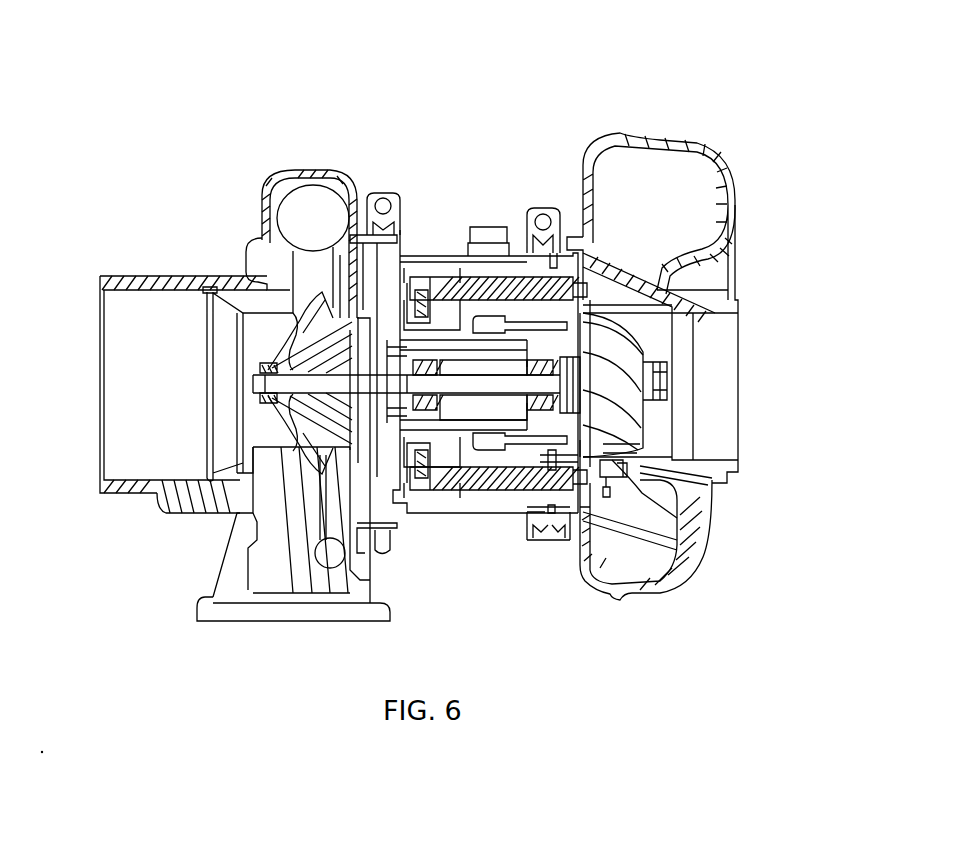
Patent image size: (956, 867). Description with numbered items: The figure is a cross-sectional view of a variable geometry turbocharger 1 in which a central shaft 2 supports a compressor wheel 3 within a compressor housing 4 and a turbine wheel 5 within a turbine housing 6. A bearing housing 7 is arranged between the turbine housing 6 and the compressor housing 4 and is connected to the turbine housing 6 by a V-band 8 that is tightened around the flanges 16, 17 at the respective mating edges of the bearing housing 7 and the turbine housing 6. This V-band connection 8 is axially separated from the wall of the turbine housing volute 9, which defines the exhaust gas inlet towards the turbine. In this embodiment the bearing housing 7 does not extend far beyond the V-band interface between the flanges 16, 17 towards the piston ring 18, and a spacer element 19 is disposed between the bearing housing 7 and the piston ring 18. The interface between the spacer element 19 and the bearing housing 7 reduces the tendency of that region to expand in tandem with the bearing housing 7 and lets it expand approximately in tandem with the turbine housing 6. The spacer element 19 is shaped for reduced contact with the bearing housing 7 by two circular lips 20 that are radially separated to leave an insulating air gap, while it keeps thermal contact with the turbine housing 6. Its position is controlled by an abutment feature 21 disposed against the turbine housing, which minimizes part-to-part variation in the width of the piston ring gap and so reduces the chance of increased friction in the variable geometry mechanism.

The variable geometry turbocharger 1 is at (252, 80).
The central shaft 2 is at (428, 383).
The compressor wheel 3 is at (330, 365).
The compressor housing 4 is at (249, 192).
The turbine wheel 5 is at (617, 348).
The turbine housing 6 is at (726, 131).
The bearing housing 7 is at (480, 536).
The V-band 8 is at (529, 201).
The turbine housing volute 9 is at (583, 172).
The flange 16 is at (541, 538).
The flange 17 is at (550, 540).
The piston ring 18 is at (613, 493).
The spacer element 19 is at (545, 467).
The circular lips 20 is at (531, 527).
The abutment feature 21 is at (572, 512).